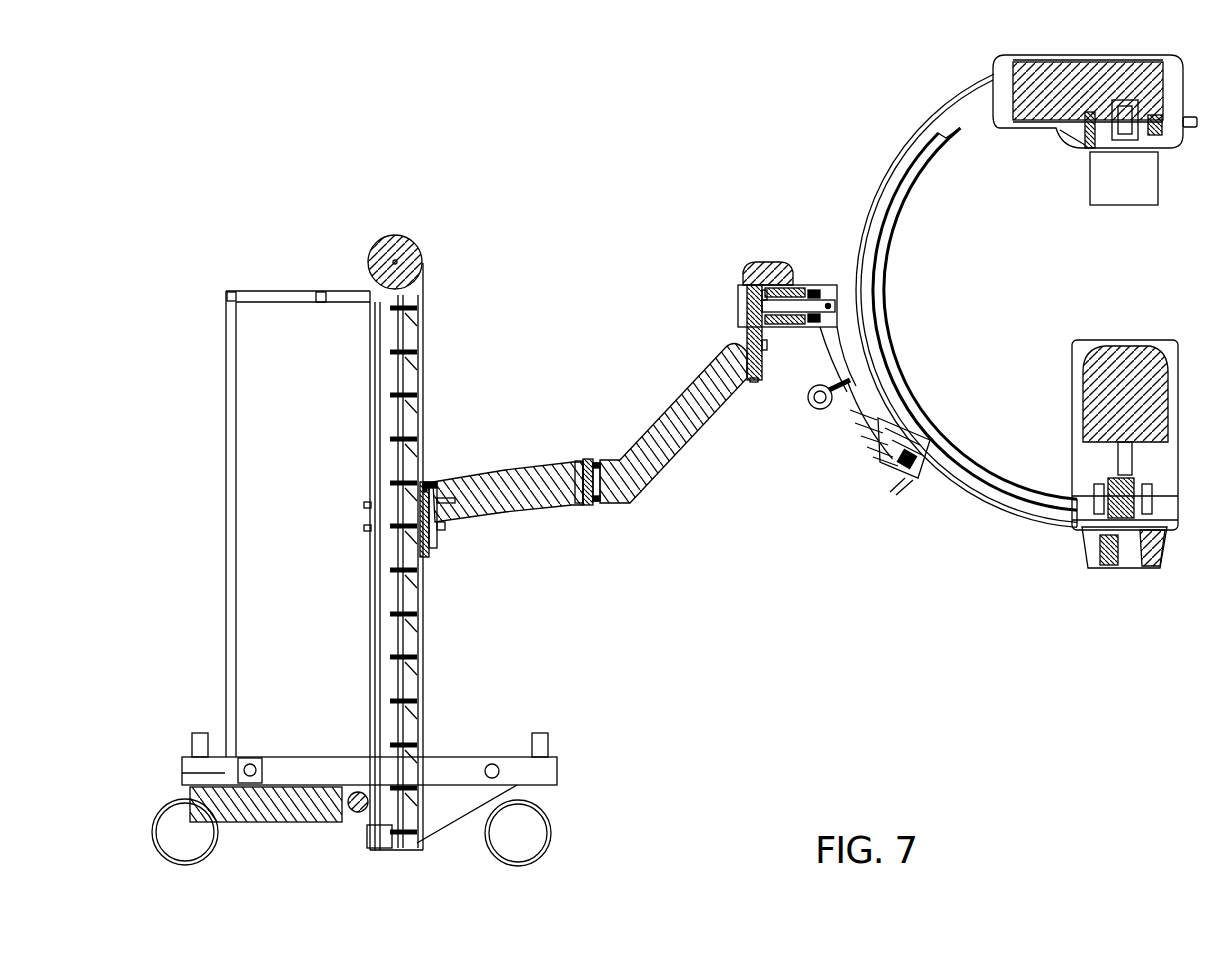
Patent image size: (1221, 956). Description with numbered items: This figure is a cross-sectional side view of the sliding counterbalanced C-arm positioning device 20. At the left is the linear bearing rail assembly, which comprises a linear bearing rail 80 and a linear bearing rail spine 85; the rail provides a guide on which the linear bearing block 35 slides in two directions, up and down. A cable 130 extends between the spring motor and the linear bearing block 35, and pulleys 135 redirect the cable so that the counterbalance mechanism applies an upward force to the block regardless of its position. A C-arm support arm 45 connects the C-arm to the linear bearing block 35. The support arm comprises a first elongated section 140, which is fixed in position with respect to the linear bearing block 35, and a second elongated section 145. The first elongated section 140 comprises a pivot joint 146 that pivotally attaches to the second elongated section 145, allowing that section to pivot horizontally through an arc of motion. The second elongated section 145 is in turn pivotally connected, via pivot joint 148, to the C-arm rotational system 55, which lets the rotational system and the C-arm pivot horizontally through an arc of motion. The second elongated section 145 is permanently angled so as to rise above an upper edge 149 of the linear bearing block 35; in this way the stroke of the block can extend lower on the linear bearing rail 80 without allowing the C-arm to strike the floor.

The sliding counterbalanced C-arm positioning device 20 is at (643, 236).
The C-arm rotational system 55 is at (823, 259).
The linear bearing rail spine 85 is at (366, 447).
The cable 130 is at (425, 329).
The linear bearing rail 80 is at (424, 688).
The pulley 135 is at (421, 256).
The linear bearing block 35 is at (427, 568).
The upper edge 149 is at (426, 486).
The C-arm support arm 45 is at (614, 528).
The first elongated section 140 is at (527, 479).
The pivot joint 146 is at (591, 456).
The second elongated section 145 is at (693, 387).
The pivot joint 148 is at (751, 395).